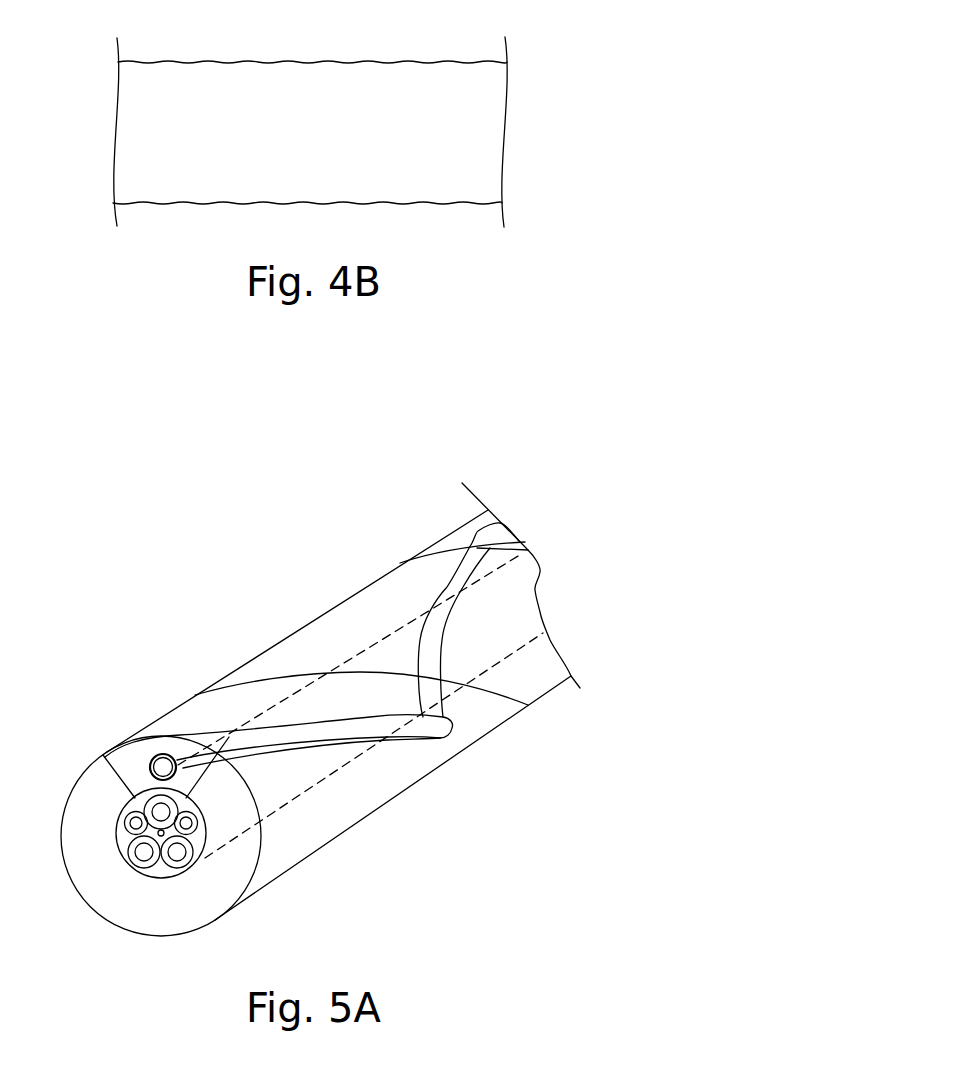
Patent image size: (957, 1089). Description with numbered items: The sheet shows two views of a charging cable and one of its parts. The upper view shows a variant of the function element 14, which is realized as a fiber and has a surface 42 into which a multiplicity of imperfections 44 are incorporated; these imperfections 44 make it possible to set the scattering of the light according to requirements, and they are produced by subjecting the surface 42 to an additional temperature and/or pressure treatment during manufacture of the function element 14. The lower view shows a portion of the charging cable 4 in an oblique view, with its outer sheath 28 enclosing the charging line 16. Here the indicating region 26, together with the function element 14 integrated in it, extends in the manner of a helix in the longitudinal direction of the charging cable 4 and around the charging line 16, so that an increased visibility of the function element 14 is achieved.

In FIG. 5A, the charging cable 4 is at (203, 632).
In FIG. 4B, the function element 14 is at (310, 116).
In FIG. 5A, the function element 14 is at (160, 755).
In FIG. 5A, the charging line 16 is at (115, 817).
In FIG. 5A, the indicating region 26 is at (113, 753).
In FIG. 5A, the outer sheath 28 is at (65, 858).
In FIG. 4B, the surface 42 is at (345, 60).
In FIG. 4B, the imperfections 44 is at (218, 65).